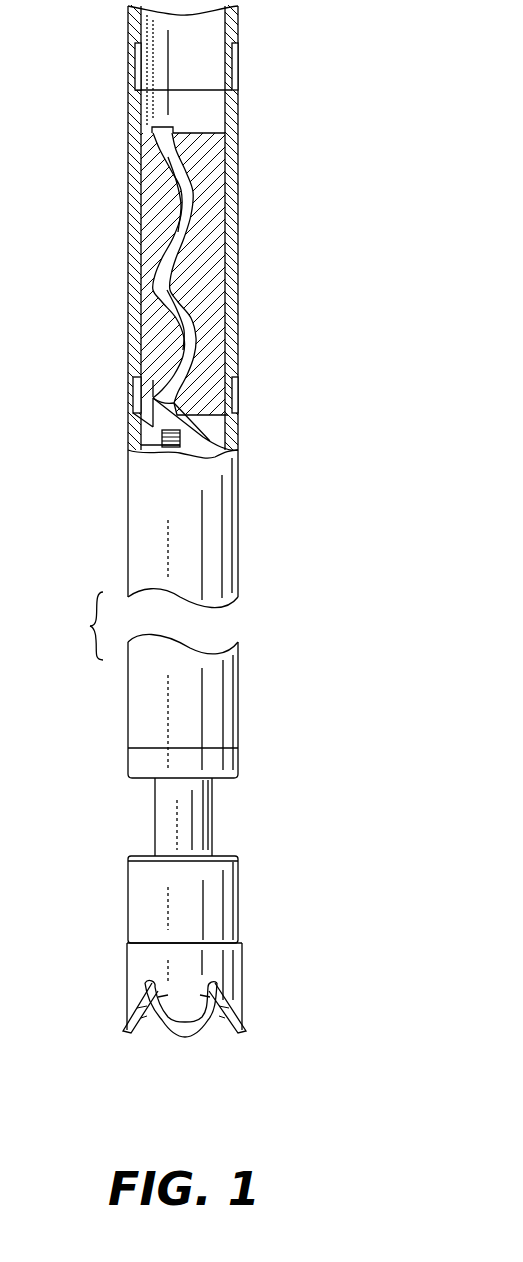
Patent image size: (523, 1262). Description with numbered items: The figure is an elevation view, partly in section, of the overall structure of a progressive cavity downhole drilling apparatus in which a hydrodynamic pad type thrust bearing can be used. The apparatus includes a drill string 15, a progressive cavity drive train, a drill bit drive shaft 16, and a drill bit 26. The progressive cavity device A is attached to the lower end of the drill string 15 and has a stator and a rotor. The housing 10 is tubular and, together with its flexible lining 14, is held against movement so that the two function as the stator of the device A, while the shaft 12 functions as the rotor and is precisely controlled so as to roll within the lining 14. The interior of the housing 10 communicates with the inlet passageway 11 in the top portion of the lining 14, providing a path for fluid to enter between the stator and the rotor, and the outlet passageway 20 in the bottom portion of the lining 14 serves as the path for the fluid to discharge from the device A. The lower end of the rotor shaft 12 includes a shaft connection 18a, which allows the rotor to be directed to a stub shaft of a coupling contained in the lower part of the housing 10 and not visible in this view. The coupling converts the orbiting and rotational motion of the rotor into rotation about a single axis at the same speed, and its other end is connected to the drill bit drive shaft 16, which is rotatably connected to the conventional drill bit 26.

The housing 10 is at (133, 97).
The passageway 11 is at (197, 150).
The shaft 12 is at (160, 133).
The flexible lining 14 is at (210, 203).
The drill string 15 is at (128, 15).
The drill bit drive shaft 16 is at (212, 825).
The shaft connection 18a is at (148, 426).
The passageway 20 is at (192, 390).
The drill bit 26 is at (147, 1027).
The progressive cavity device A is at (86, 252).